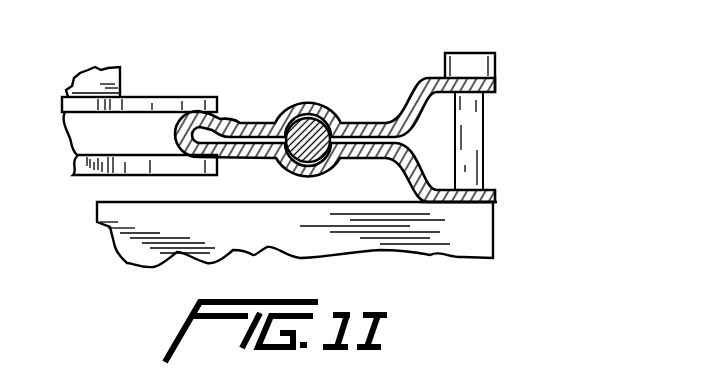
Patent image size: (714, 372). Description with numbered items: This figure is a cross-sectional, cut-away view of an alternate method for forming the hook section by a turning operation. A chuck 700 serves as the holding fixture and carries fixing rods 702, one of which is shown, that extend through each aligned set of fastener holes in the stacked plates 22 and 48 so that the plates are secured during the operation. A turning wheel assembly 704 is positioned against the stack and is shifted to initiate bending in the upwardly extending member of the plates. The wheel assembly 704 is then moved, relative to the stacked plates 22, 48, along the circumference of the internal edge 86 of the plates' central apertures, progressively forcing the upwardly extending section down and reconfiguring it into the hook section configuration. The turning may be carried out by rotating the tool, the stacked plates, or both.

The turning wheel assembly 704 is at (135, 88).
The internal edge 86 is at (243, 122).
The plate 22 is at (496, 73).
The fixing rod 702 is at (473, 127).
The plate 48 is at (493, 192).
The chuck 700 is at (493, 237).